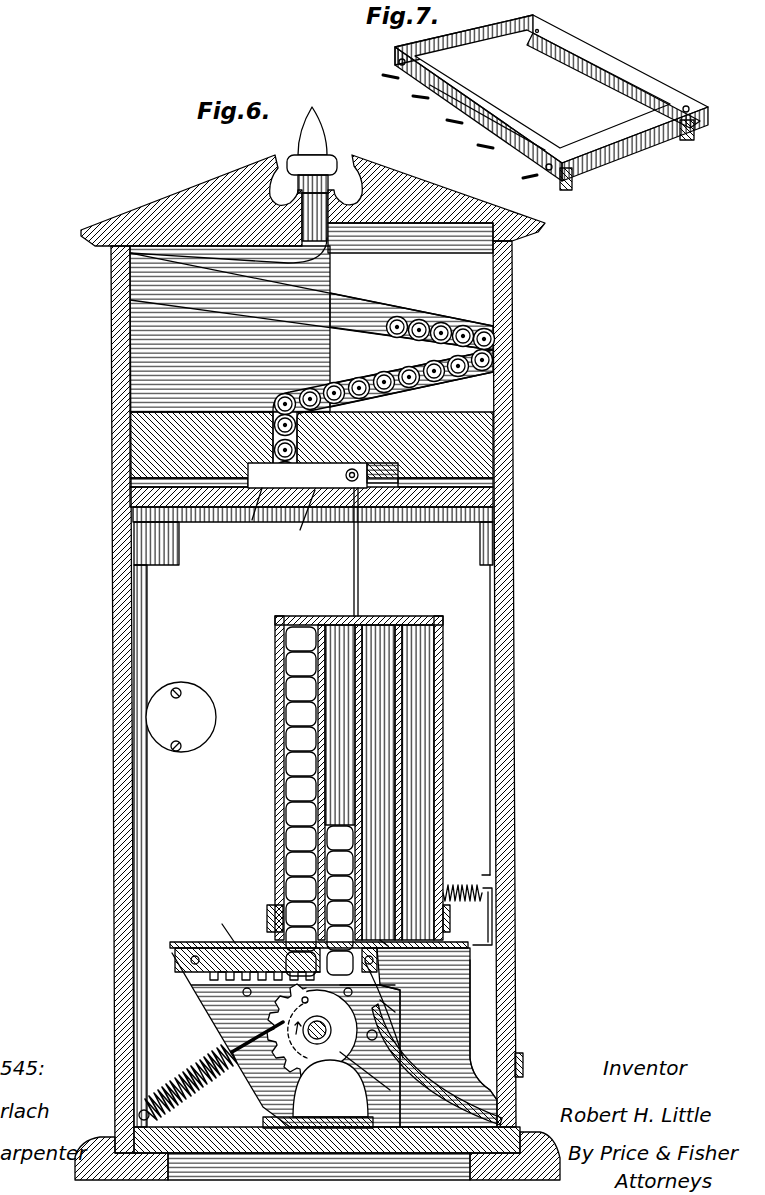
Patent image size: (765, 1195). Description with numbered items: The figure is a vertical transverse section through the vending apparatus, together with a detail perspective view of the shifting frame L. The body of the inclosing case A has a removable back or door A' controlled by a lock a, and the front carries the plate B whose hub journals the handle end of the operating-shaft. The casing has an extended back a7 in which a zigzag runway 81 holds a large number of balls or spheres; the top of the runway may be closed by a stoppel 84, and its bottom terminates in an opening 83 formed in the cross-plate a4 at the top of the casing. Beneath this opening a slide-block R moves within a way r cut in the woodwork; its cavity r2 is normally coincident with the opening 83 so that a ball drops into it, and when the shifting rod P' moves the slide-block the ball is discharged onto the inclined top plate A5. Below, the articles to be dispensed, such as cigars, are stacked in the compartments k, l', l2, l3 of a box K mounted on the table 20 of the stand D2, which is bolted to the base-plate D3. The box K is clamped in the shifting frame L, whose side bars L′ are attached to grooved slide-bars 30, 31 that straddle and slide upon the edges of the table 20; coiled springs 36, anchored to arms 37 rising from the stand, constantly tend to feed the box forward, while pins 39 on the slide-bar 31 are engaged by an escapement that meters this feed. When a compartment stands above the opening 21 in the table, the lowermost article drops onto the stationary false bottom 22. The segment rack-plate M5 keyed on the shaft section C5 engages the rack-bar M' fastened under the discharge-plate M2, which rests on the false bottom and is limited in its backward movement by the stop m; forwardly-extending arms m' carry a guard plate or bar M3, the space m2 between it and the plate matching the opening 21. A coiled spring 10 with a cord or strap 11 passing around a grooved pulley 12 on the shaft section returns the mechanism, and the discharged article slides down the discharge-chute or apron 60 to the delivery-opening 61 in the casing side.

In FIG. 6, the body of the inclosing case A is at (313, 654).
In FIG. 6, the removable back or door A' is at (313, 817).
In FIG. 6, the top plate A5 is at (130, 495).
In FIG. 6, the lock a is at (181, 717).
In FIG. 6, the cross-plate a4 is at (478, 435).
In FIG. 6, the extended back a7 is at (130, 322).
In FIG. 6, the plate B is at (735, 1160).
In FIG. 6, the stoppel 84 is at (328, 150).
In FIG. 6, the runway 81 is at (372, 322).
In FIG. 6, the opening 83 is at (298, 436).
In FIG. 6, the space or way r is at (370, 486).
In FIG. 6, the cavity r2 is at (250, 515).
In FIG. 6, the slide-block R is at (301, 525).
In FIG. 6, the shifting rod P' is at (370, 552).
In FIG. 6, the box K is at (369, 778).
In FIG. 6, the compartment k is at (276, 765).
In FIG. 6, the compartment l' is at (340, 800).
In FIG. 6, the compartment l2 is at (378, 782).
In FIG. 6, the compartment l3 is at (418, 782).
In FIG. 6, the coiled springs 36 is at (462, 882).
In FIG. 6, the arms 37 is at (493, 915).
In FIG. 6, the side bars L′ is at (267, 912).
In FIG. 7, the side bars L′ is at (672, 150).
In FIG. 6, the table 20 is at (233, 946).
In FIG. 6, the opening 21 is at (379, 935).
In FIG. 6, the stop m is at (240, 965).
In FIG. 6, the discharge-plate M2 is at (213, 924).
In FIG. 6, the guard plate or bar M3 is at (465, 970).
In FIG. 6, the forwardly-extending arms m' is at (395, 970).
In FIG. 6, the rack-bar M' is at (286, 1040).
In FIG. 6, the gear M5 is at (299, 1031).
In FIG. 6, the cord or strap 11 is at (240, 1046).
In FIG. 6, the coiled spring 10 is at (188, 1082).
In FIG. 6, the grooved pulley 12 is at (317, 1030).
In FIG. 6, the stationary false bottom 22 is at (328, 1010).
In FIG. 6, the space m2 is at (408, 1013).
In FIG. 6, the discharge-chute or apron 60 is at (440, 1090).
In FIG. 6, the section of the operating-shaft C5 is at (371, 1073).
In FIG. 6, the stand D2 is at (437, 1037).
In FIG. 6, the base-plate D3 is at (318, 1094).
In FIG. 6, the delivery-opening 61 is at (524, 1085).
In FIG. 7, the shifting frame L is at (551, 98).
In FIG. 7, the grooved slide-bar 30 is at (632, 82).
In FIG. 7, the grooved slide-bar 31 is at (505, 133).
In FIG. 7, the pins 39 is at (430, 105).